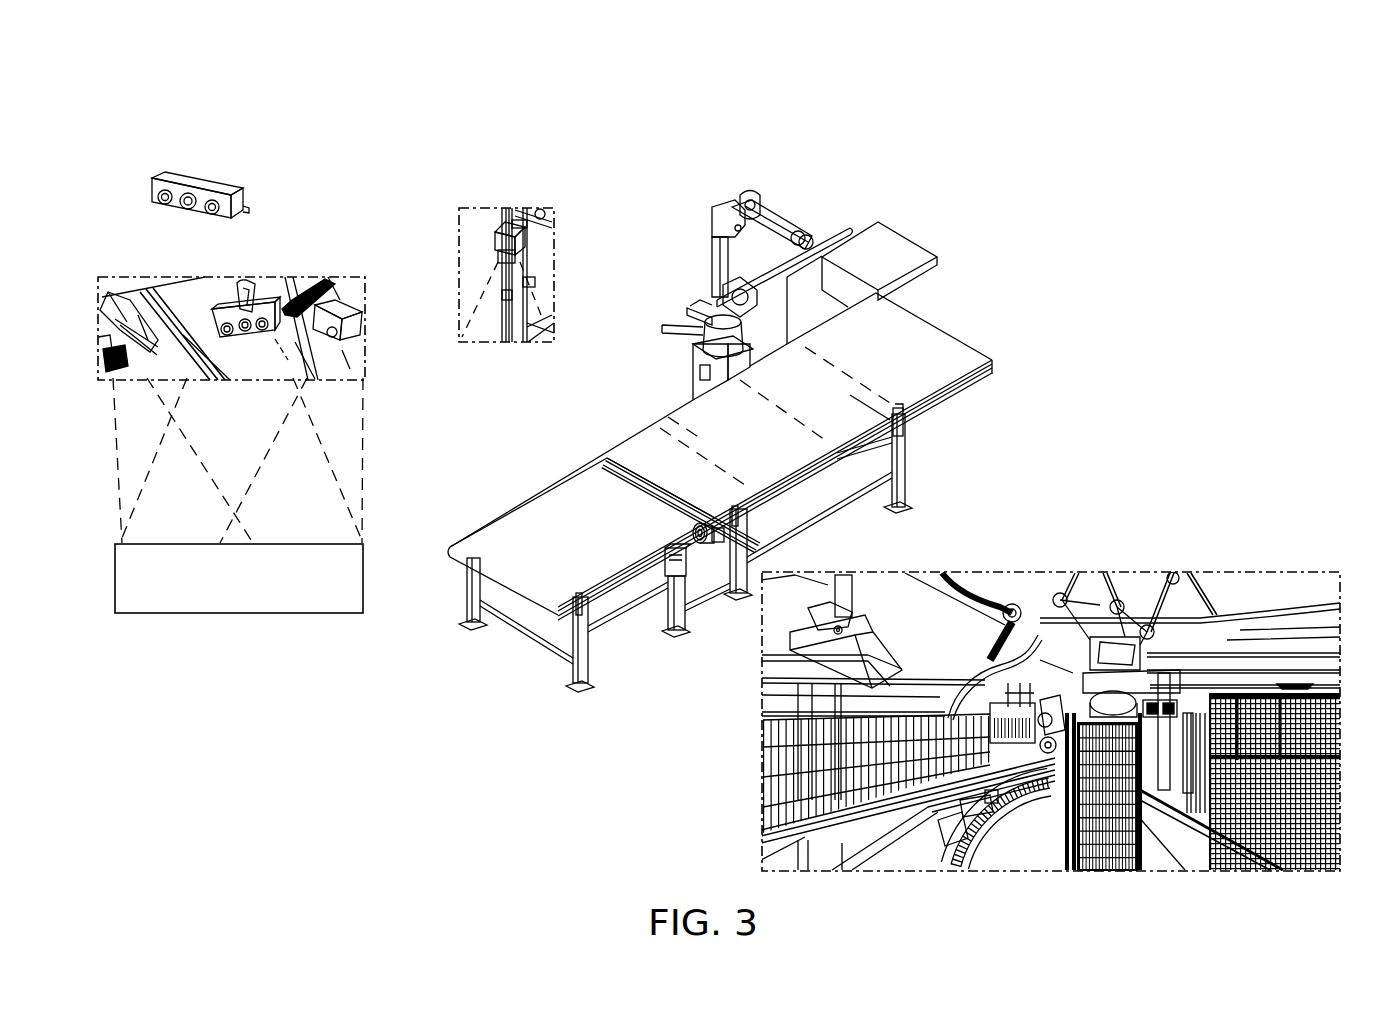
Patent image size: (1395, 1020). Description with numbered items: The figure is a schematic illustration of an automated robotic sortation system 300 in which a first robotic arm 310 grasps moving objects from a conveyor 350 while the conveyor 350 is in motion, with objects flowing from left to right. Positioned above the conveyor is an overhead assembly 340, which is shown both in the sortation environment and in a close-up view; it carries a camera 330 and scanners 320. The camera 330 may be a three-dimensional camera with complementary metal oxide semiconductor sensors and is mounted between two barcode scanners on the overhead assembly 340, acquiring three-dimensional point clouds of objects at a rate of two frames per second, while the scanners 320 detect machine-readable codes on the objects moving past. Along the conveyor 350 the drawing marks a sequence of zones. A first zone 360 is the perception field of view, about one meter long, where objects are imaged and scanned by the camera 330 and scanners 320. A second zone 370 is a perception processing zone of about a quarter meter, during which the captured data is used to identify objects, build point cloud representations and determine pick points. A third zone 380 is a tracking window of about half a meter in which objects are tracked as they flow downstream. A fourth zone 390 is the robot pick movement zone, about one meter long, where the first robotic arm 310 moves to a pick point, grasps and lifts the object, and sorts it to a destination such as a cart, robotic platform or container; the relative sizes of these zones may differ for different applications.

The automated robotic sortation system 300 is at (1209, 59).
The first robotic arm 310 is at (831, 183).
The scanner 320 is at (523, 184).
The camera 330 is at (209, 152).
The overhead assembly 340 is at (256, 266).
The conveyor 350 is at (976, 270).
The first zone 360 is at (760, 457).
The second zone 370 is at (853, 462).
The third zone 380 is at (895, 436).
The fourth zone 390 is at (903, 375).